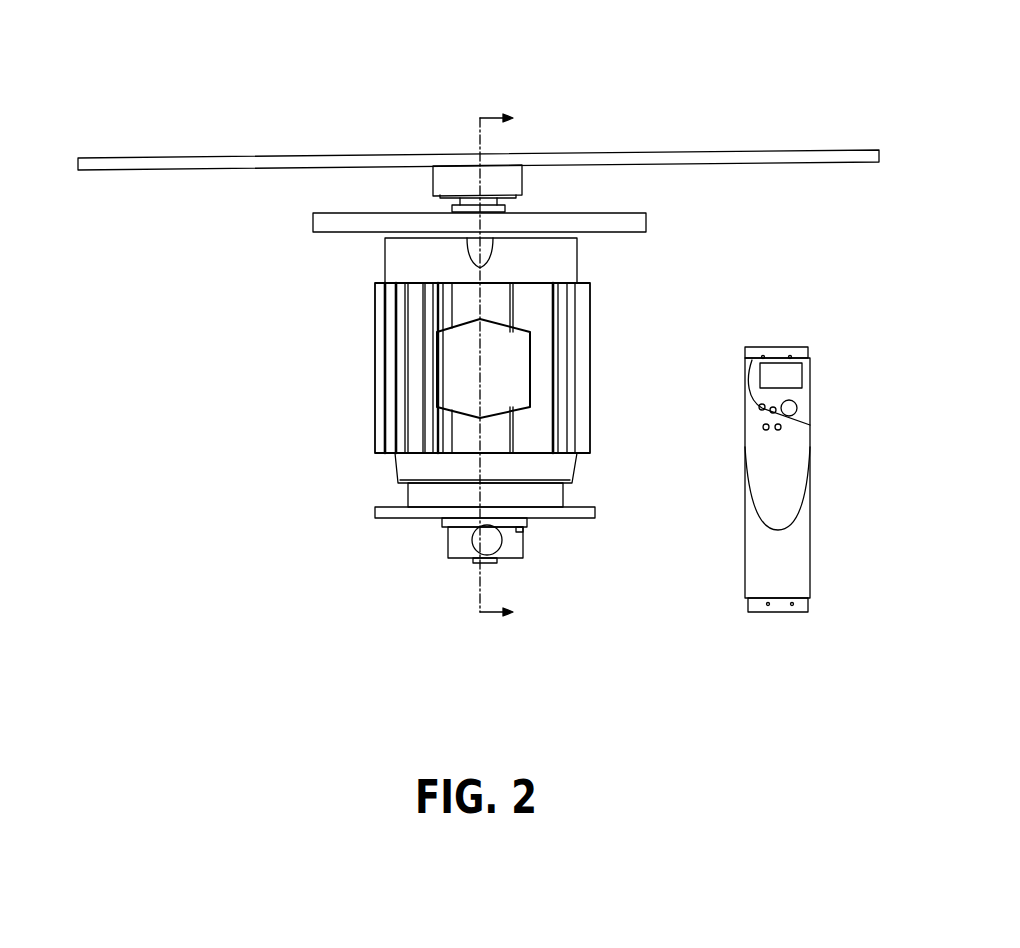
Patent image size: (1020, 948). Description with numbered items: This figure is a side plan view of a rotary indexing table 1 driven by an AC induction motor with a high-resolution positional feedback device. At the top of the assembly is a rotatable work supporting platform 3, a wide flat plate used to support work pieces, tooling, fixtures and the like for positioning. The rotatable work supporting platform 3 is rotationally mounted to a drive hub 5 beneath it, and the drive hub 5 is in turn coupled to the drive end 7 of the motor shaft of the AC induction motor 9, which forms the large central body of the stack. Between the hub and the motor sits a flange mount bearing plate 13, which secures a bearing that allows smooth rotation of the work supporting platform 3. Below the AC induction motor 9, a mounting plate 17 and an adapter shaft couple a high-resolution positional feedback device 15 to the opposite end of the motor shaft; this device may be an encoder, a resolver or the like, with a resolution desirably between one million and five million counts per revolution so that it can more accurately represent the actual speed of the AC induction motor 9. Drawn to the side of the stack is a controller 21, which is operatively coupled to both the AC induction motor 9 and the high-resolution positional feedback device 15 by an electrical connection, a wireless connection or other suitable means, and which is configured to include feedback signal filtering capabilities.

The rotary indexing table 1 is at (105, 82).
The rotatable work supporting platform 3 is at (738, 158).
The drive hub 5 is at (512, 183).
The drive end 7 is at (455, 208).
The AC induction motor 9 is at (563, 355).
The flange mount bearing plate 13 is at (622, 218).
The high-resolution positional feedback device 15 is at (510, 540).
The mounting plate 17 is at (583, 512).
The controller 21 is at (800, 447).